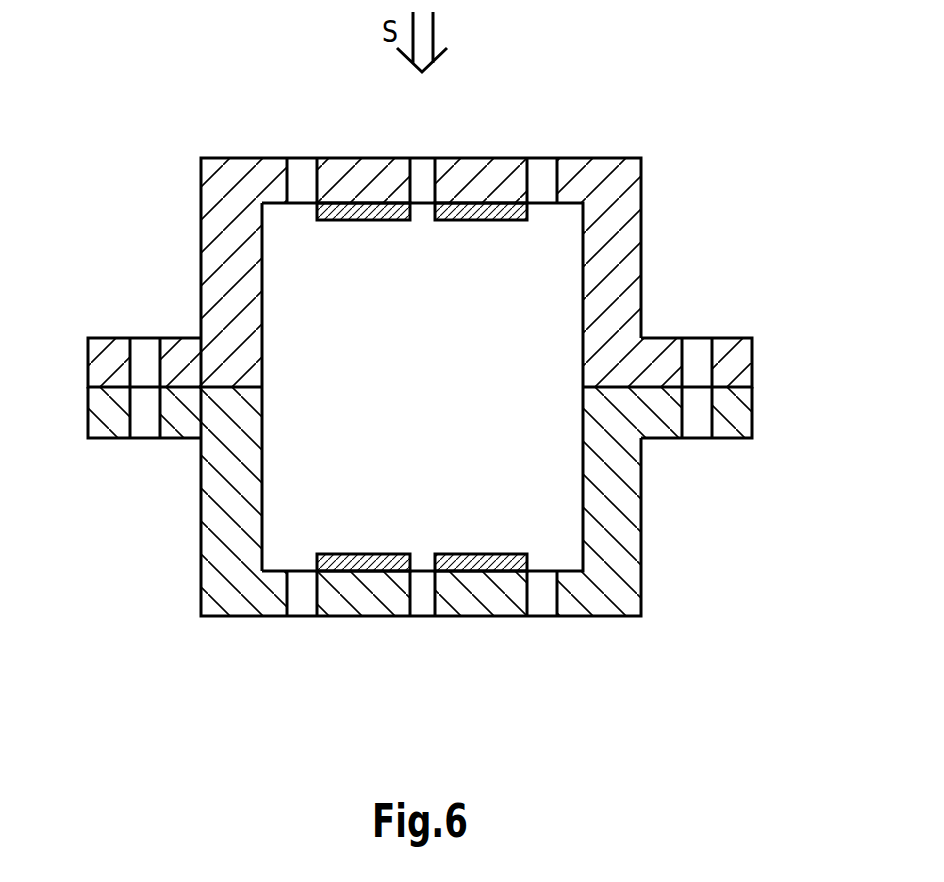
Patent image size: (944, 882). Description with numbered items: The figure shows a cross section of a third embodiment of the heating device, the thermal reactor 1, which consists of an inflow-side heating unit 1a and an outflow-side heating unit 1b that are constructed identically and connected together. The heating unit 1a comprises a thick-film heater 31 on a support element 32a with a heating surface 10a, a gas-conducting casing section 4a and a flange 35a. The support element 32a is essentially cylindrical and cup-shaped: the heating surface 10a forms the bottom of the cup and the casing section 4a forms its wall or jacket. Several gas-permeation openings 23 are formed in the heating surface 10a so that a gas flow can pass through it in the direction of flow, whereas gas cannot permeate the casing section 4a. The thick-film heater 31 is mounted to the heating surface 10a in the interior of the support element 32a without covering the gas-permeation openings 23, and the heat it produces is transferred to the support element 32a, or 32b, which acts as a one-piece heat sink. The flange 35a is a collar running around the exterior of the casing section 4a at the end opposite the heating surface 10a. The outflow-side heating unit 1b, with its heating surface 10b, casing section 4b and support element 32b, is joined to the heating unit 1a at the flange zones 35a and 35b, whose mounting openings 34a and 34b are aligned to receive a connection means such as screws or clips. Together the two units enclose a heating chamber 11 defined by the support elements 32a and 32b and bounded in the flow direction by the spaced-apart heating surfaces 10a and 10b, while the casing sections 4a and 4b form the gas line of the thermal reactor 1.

The thermal reactor 1 is at (837, 155).
The inflow-side heating unit 1a is at (416, 242).
The outflow-side heating unit 1b is at (416, 533).
The casing section 4a is at (215, 252).
The casing section 4b is at (215, 528).
The heating surface 10a is at (475, 158).
The heating surface 10b is at (470, 618).
The heating chamber 11 is at (533, 312).
The gas-permeation openings 23 is at (541, 158).
The thick-film heater 31 is at (525, 218).
The support element 32a is at (196, 157).
The support element 32b is at (196, 618).
The mounting opening 34a is at (146, 338).
The mounting opening 34b is at (146, 432).
The flange 35a is at (98, 358).
The flange 35b is at (98, 420).